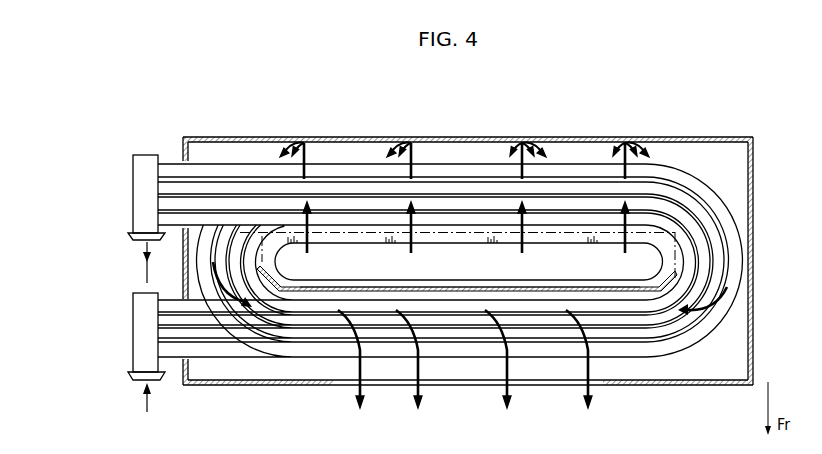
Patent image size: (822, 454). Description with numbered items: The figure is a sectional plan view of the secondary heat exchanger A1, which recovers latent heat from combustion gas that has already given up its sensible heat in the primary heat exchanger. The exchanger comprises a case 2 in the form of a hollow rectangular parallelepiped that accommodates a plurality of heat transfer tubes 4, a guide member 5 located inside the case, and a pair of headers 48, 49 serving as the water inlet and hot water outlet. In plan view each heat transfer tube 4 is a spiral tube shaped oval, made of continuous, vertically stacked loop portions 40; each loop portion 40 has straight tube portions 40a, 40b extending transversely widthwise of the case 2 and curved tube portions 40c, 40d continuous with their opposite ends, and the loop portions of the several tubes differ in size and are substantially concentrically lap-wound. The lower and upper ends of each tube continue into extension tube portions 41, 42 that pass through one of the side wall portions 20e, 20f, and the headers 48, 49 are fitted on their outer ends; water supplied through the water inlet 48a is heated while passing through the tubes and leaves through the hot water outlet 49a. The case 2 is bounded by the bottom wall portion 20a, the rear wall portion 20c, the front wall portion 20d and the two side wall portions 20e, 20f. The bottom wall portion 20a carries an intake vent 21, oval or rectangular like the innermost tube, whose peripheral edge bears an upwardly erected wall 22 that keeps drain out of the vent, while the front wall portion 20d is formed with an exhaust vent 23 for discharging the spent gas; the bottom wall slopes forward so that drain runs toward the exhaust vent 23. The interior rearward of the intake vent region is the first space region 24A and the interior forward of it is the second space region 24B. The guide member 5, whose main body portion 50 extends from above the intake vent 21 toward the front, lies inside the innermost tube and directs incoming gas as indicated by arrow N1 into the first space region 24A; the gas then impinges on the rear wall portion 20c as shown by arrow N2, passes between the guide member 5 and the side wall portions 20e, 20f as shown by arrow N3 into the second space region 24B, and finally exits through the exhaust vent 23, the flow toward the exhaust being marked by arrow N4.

The secondary heat exchanger A1 is at (231, 126).
The case 2 is at (268, 136).
The heat transfer tube 4 is at (358, 197).
The guide member 5 is at (392, 290).
The bottom wall portion 20a is at (752, 342).
The rear wall portion 20c is at (697, 137).
The front wall portion 20d is at (665, 386).
The side wall portion 20e is at (186, 288).
The side wall portion 20f is at (752, 247).
The intake vent 21 is at (457, 256).
The erected wall 22 is at (542, 250).
The exhaust vent 23 is at (522, 387).
The first space region 24A is at (748, 158).
The second space region 24B is at (752, 368).
The loop portion 40 is at (467, 215).
The straight tube portion 40a is at (597, 180).
The straight tube portion 40b is at (525, 340).
The curved tube portion 40c is at (705, 252).
The curved tube portion 40d is at (258, 323).
The extension tube portion 41 is at (205, 327).
The extension tube portion 42 is at (220, 186).
The header 48 is at (138, 338).
The water inlet 48a is at (136, 378).
The header 49 is at (138, 207).
The hot water outlet 49a is at (136, 243).
The main body portion 50 is at (355, 290).
The arrow N1 is at (458, 234).
The arrow N2 is at (482, 161).
The arrow N3 is at (467, 289).
The exhaust gas flow N4 is at (472, 359).